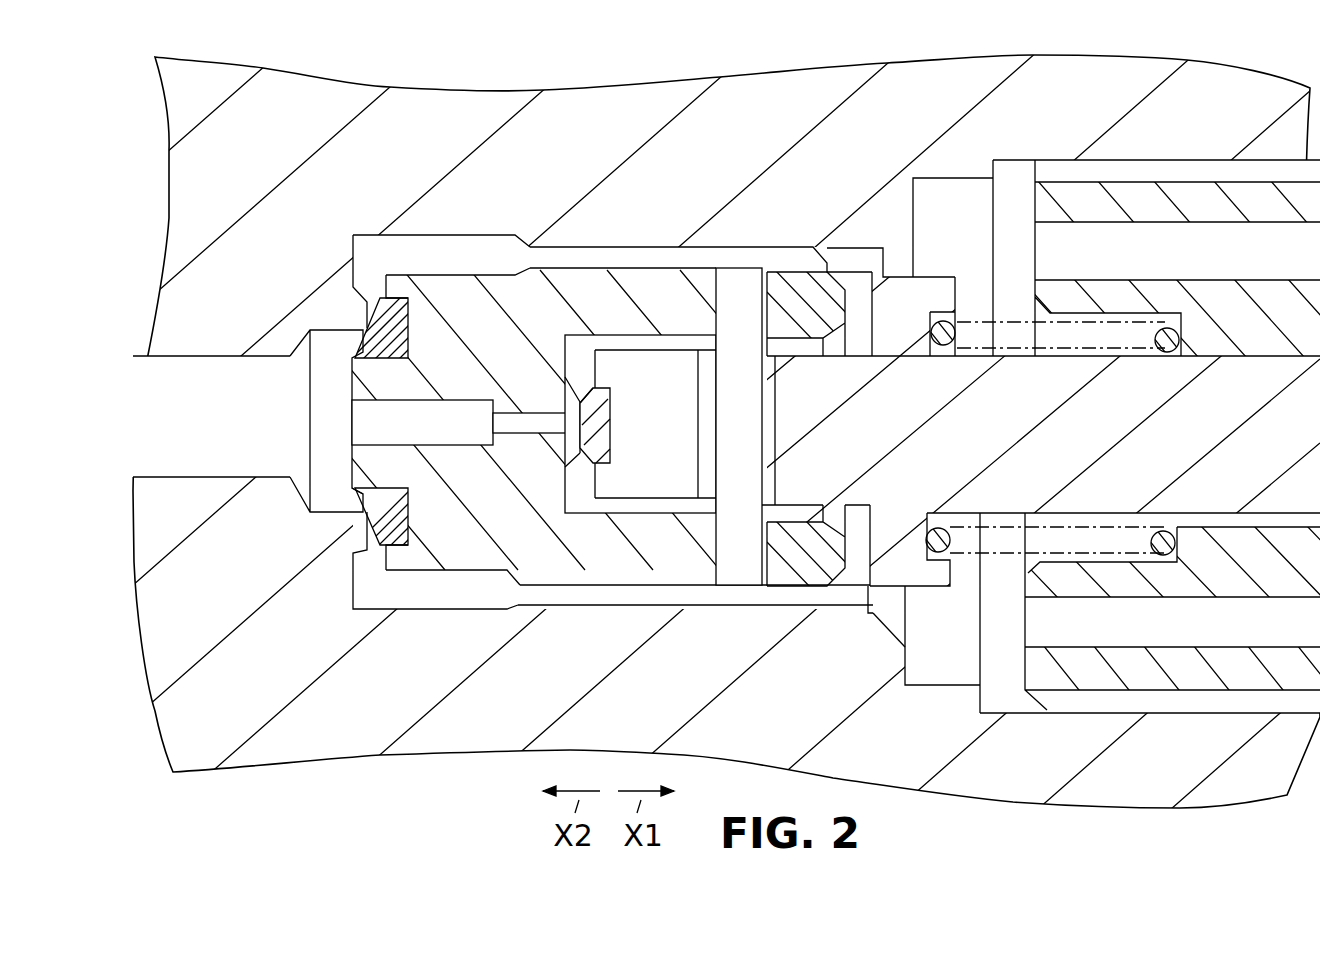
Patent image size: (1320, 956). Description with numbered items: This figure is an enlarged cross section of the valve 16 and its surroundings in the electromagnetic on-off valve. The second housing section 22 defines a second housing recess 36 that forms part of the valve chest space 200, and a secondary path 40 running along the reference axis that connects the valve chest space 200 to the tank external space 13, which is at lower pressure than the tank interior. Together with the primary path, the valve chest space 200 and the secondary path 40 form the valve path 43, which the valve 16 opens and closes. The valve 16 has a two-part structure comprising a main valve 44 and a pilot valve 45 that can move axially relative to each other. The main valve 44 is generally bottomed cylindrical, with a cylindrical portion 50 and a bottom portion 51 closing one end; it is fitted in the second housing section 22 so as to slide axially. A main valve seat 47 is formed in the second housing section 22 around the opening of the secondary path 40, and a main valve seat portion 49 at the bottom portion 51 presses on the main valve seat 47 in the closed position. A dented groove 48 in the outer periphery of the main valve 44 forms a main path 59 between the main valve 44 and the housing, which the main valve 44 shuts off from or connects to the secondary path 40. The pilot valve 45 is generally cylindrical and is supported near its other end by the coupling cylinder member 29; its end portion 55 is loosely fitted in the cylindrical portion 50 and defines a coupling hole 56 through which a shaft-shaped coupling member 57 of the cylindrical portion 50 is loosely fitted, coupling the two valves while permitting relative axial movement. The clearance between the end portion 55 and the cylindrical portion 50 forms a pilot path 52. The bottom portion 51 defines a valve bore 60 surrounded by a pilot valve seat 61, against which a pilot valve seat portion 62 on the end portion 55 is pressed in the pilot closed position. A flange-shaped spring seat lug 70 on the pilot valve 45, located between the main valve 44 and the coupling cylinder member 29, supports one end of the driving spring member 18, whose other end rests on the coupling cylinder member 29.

The tank external space 13 is at (103, 311).
The valve 16 is at (400, 571).
The driving spring member 18 is at (962, 334).
The second housing section 22 is at (594, 93).
The coupling cylinder member 29 is at (1183, 200).
The second housing recess 36 is at (483, 600).
The secondary path 40 is at (213, 463).
The valve path 43 is at (940, 676).
The main valve 44 is at (562, 282).
The pilot valve 45 is at (812, 377).
The main valve seat 47 is at (377, 497).
The dented groove 48 is at (647, 258).
The main valve seat portion 49 is at (360, 512).
The cylindrical portion 50 is at (693, 562).
The bottom portion 51 is at (350, 387).
The pilot path 52 is at (650, 623).
The end portion 55 is at (663, 494).
The coupling hole 56 is at (705, 389).
The coupling member 57 is at (741, 284).
The main path 59 is at (405, 245).
The valve bore 60 is at (452, 411).
The pilot valve seat 61 is at (590, 437).
The pilot valve seat portion 62 is at (583, 405).
The spring seat lug 70 is at (895, 297).
The valve chest space 200 is at (917, 620).